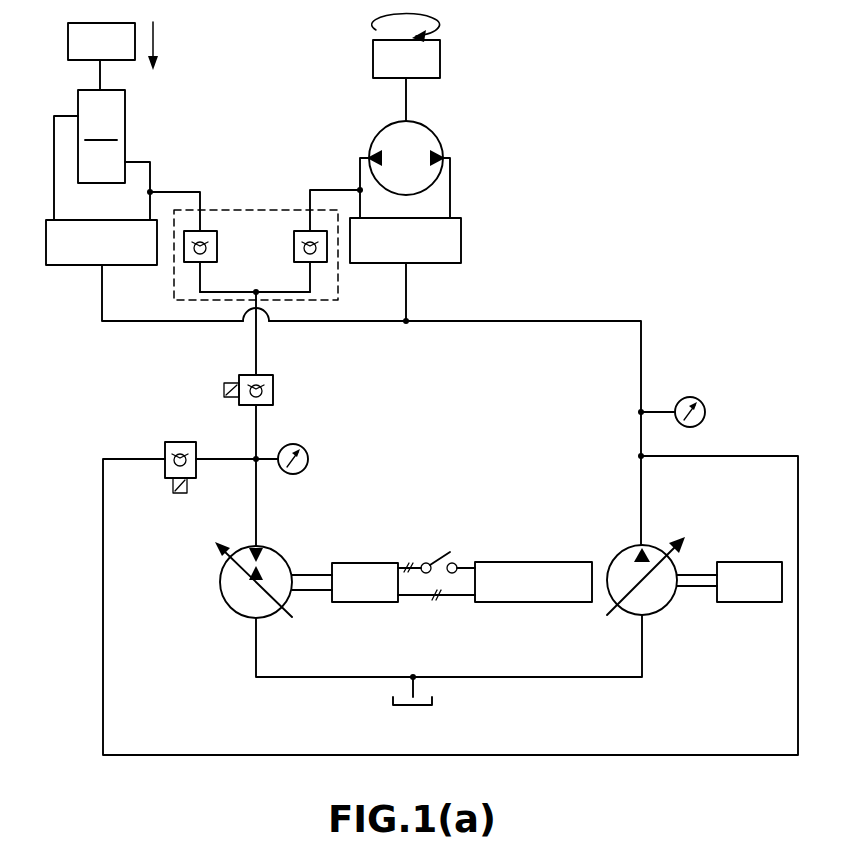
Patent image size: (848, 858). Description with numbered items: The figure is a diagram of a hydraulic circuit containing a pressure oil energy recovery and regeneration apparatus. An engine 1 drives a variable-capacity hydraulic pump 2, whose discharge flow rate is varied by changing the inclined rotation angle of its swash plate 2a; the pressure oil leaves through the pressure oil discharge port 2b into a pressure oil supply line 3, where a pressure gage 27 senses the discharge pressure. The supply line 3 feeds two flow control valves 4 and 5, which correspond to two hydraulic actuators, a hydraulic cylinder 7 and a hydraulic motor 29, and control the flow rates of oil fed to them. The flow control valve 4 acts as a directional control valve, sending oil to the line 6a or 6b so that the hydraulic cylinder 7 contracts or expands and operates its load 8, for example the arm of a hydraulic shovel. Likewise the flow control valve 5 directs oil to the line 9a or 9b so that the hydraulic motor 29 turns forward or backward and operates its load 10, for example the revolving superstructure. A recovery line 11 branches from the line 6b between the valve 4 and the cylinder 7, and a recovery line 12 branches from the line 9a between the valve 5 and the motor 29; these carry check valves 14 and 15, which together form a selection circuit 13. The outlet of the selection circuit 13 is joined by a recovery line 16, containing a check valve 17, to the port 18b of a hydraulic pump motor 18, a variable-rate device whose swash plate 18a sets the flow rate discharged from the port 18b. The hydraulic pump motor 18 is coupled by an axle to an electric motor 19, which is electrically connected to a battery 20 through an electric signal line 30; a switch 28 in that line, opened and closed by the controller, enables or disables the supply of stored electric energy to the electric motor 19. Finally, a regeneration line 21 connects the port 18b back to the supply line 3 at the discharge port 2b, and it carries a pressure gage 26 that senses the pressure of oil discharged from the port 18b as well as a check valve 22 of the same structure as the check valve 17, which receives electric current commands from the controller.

The engine 1 is at (723, 602).
The hydraulic pump 2 is at (655, 543).
The swash plate 2a is at (638, 588).
The pressure oil discharge port 2b is at (640, 545).
The pressure oil supply line 3 is at (641, 340).
The flow control valve 4 is at (70, 265).
The flow control valve 5 is at (461, 235).
The line 6a is at (54, 116).
The line 6b is at (145, 160).
The hydraulic cylinder 7 is at (125, 102).
The load 8 is at (118, 22).
The line 9a is at (360, 165).
The line 9b is at (450, 183).
The load 10 is at (373, 55).
The recovery line 11 is at (196, 190).
The recovery line 12 is at (315, 190).
The selection circuit 13 is at (307, 300).
The check valve 14 is at (198, 264).
The check valve 15 is at (327, 262).
The recovery line 16 is at (256, 350).
The check valve 17 is at (273, 400).
The hydraulic pump motor 18 is at (287, 555).
The swash plate 18a is at (240, 570).
The port 18b is at (262, 543).
The electric motor 19 is at (337, 602).
The battery 20 is at (547, 602).
The regeneration line 21 is at (103, 548).
The check valve 22 is at (165, 450).
The pressure gage 26 is at (308, 459).
The pressure gage 27 is at (705, 412).
The switch 28 is at (454, 557).
The hydraulic motor 29 is at (436, 135).
The electric signal line 30 is at (455, 596).